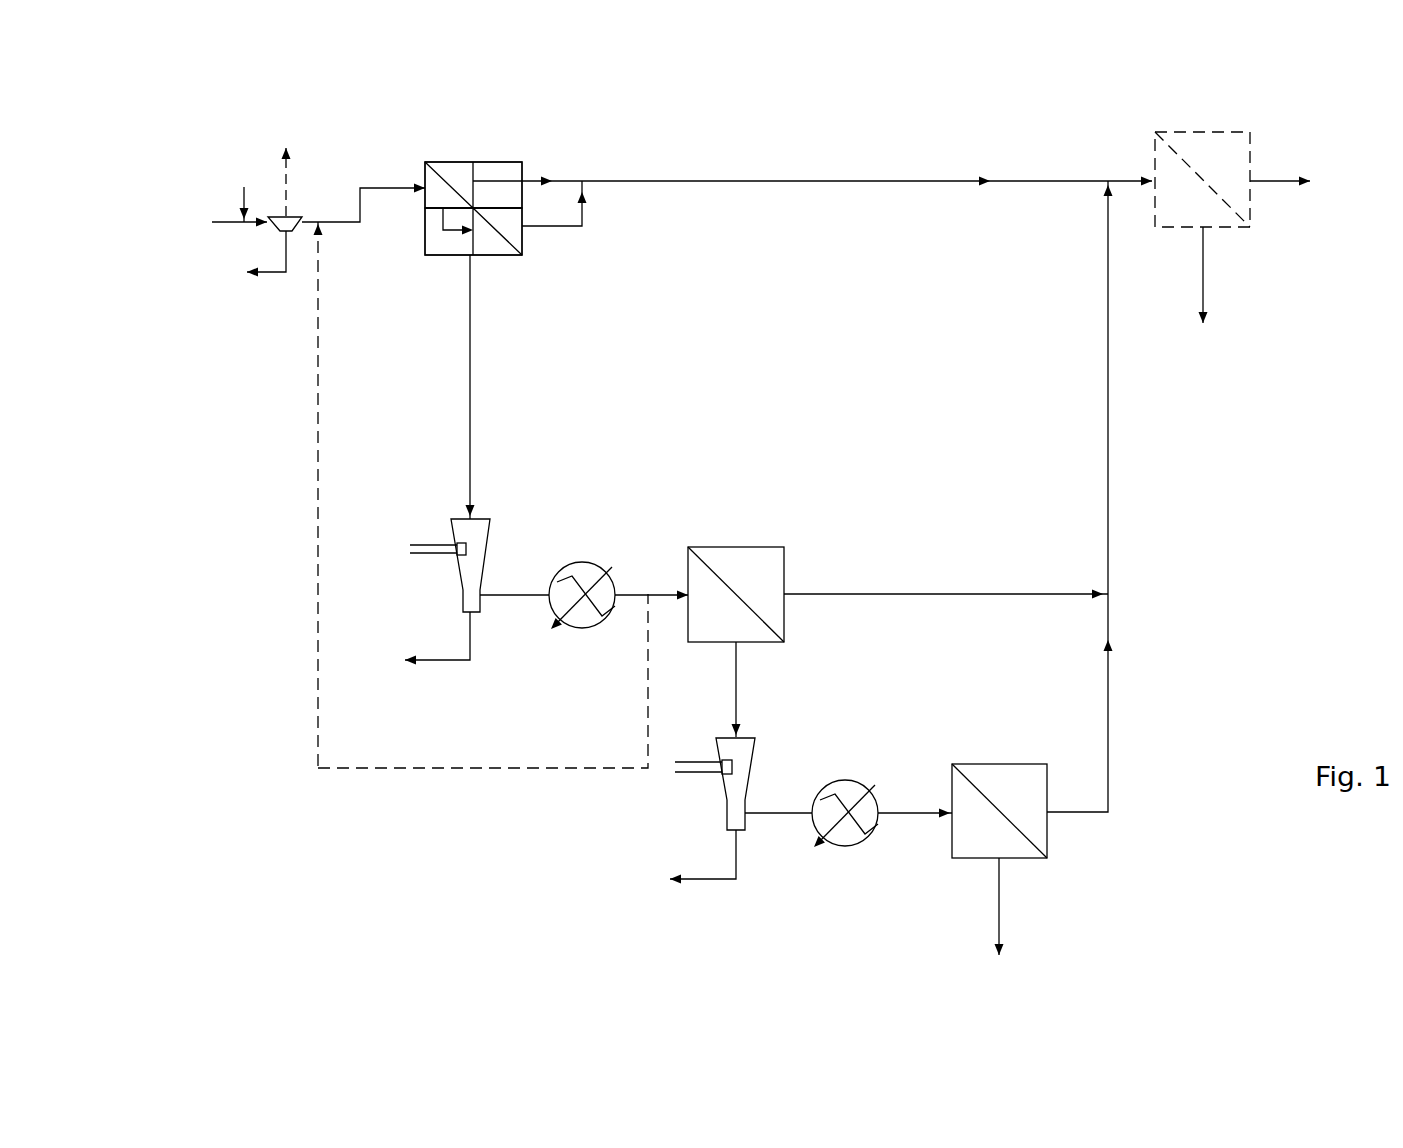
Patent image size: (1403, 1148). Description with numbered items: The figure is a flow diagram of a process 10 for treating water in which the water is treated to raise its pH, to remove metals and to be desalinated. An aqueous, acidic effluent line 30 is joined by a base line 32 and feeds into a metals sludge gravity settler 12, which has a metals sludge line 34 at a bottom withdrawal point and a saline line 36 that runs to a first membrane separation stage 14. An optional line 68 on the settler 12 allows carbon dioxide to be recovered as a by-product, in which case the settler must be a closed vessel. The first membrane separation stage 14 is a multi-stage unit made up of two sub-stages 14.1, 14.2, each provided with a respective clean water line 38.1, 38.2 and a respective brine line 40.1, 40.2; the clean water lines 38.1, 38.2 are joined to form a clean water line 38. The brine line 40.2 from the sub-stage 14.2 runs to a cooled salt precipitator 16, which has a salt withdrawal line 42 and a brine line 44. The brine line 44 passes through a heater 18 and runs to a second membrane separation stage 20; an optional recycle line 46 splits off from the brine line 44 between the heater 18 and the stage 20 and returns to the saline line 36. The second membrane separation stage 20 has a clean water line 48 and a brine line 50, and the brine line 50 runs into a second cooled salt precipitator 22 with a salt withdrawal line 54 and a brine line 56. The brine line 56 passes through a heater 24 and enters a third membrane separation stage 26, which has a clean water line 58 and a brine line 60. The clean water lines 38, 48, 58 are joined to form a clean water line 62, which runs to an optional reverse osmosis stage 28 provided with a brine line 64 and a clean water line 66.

The process to treat water 10 is at (963, 95).
The metals sludge gravity settler 12 is at (287, 216).
The first membrane separation stage 14 is at (506, 115).
The membrane separation sub-stage 14.1 is at (431, 164).
The membrane separation sub-stage 14.2 is at (455, 246).
The cooled salt precipitator 16 is at (505, 506).
The heater 18 is at (594, 548).
The second membrane separation stage 20 is at (786, 515).
The cooled salt precipitator 22 is at (706, 724).
The heater 24 is at (855, 750).
The third membrane separation stage 26 is at (962, 758).
The optional reverse osmosis stage 28 is at (1209, 127).
The aqueous acidic effluent line 30 is at (228, 225).
The base line 32 is at (242, 200).
The metals sludge line 34 is at (268, 275).
The saline line 36 is at (340, 226).
The clean water line 38 is at (885, 181).
The clean water line 38.1 is at (533, 179).
The clean water line 38.2 is at (565, 228).
The brine line 40.1 is at (443, 229).
The brine line 40.2 is at (473, 338).
The salt withdrawal line 42 is at (473, 649).
The brine line 44 is at (515, 594).
The optional recycle line 46 is at (318, 478).
The clean water line 48 is at (989, 593).
The brine line 50 is at (738, 660).
The salt withdrawal line 54 is at (700, 881).
The brine line 56 is at (783, 812).
The clean water line 58 is at (1110, 700).
The brine line 60 is at (1001, 880).
The clean water line 62 is at (1128, 178).
The brine line 64 is at (1205, 270).
The clean water line 66 is at (1265, 180).
The optional line 68 is at (288, 186).